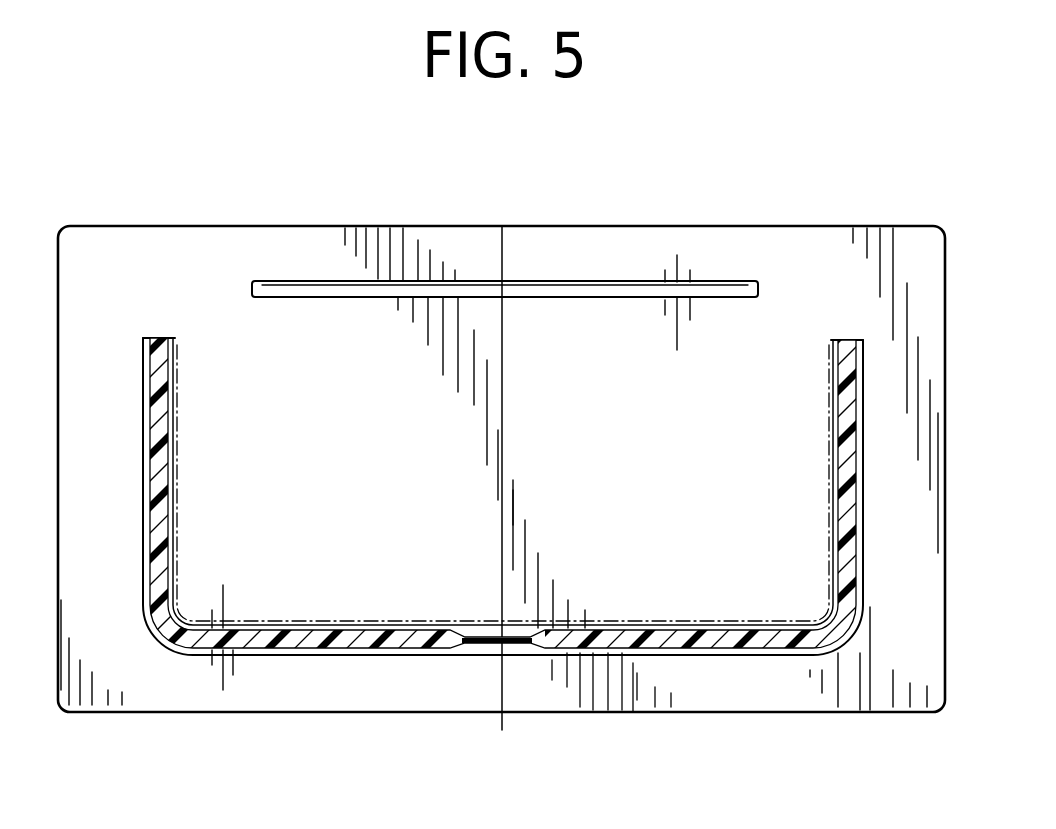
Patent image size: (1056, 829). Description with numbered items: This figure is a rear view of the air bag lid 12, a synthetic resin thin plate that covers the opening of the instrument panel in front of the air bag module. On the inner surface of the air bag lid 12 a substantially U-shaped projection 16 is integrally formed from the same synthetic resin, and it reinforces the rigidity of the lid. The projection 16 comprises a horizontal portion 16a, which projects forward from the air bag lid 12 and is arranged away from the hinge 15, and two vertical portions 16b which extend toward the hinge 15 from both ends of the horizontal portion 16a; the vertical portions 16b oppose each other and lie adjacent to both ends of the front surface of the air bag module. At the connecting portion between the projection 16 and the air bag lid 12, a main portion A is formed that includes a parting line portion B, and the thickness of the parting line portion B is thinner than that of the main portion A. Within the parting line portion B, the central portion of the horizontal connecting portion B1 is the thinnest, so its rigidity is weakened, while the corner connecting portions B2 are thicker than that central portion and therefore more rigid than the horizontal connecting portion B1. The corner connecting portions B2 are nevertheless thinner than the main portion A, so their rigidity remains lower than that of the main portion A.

The air bag lid 12 is at (747, 224).
The hinge 15 is at (553, 287).
The projection 16 is at (397, 664).
The horizontal portion 16a is at (632, 715).
The vertical portions 16b is at (176, 452).
The main portion A is at (273, 662).
The parting line portion B is at (341, 624).
The horizontal connecting portion B1 is at (518, 633).
The corner connecting portions B2 is at (173, 638).